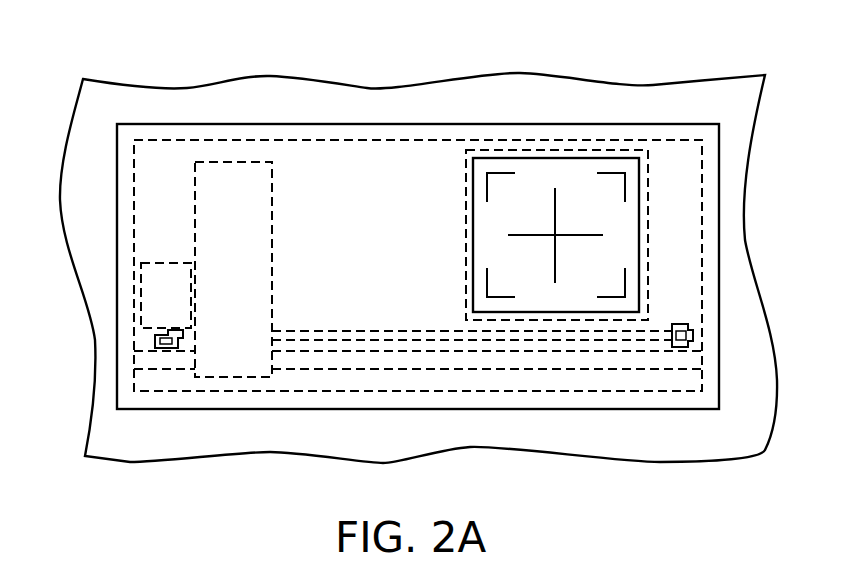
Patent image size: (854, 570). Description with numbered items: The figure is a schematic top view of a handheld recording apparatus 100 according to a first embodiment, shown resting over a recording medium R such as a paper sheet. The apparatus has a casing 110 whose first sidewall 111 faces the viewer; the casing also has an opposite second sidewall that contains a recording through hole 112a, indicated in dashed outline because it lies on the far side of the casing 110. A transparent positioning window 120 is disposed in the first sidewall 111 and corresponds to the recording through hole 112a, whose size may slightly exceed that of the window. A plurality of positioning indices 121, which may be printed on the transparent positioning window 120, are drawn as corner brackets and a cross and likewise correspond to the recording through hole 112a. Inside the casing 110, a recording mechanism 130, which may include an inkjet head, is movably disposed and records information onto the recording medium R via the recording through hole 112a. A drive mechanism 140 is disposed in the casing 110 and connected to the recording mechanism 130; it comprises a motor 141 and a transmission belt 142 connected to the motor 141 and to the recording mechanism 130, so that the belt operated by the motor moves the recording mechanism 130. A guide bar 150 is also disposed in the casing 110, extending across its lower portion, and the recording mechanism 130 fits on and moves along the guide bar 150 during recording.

The handheld recording apparatus 100 is at (143, 103).
The recording medium R is at (727, 443).
The casing 110 is at (117, 158).
The first sidewall 111 is at (358, 158).
The recording through hole 112a is at (647, 273).
The recording mechanism 130 is at (215, 232).
The transparent positioning window 120 is at (639, 235).
The positioning indices 121 is at (580, 236).
The drive mechanism 140 is at (111, 389).
The motor 141 is at (148, 282).
The transmission belt 142 is at (185, 337).
The guide bar 150 is at (653, 358).